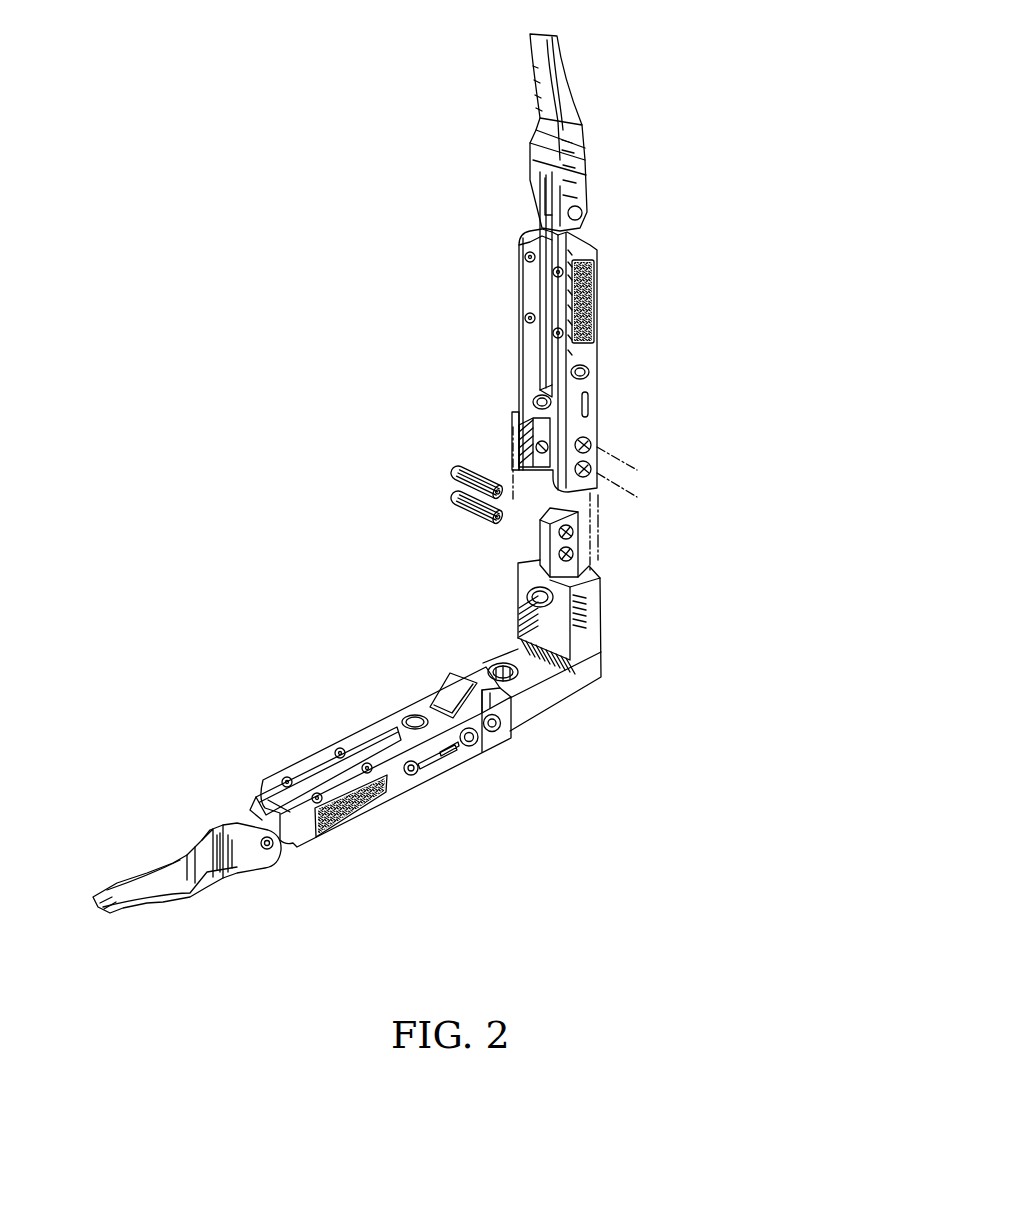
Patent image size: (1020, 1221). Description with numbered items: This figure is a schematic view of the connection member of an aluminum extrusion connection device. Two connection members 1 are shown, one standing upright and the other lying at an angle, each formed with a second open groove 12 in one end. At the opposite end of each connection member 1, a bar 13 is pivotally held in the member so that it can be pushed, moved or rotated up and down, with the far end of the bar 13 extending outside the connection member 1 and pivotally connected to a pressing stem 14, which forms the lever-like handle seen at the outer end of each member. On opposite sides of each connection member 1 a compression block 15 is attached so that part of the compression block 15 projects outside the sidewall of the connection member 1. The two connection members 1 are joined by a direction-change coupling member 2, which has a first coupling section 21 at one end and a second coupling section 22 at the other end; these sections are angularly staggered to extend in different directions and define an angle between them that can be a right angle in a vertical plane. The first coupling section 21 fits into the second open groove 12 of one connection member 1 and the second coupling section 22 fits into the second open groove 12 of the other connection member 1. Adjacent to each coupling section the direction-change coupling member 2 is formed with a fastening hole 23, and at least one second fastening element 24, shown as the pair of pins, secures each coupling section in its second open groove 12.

The connection member 1 is at (596, 387).
The direction-change coupling member 2 is at (583, 677).
The second open groove 12 is at (545, 433).
The bar 13 is at (547, 290).
The pressing stem 14 is at (571, 100).
The compression block 15 is at (593, 297).
The first coupling section 21 is at (447, 703).
The second coupling section 22 is at (541, 540).
The fastening hole 23 is at (527, 600).
The second fastening element 24 is at (453, 495).